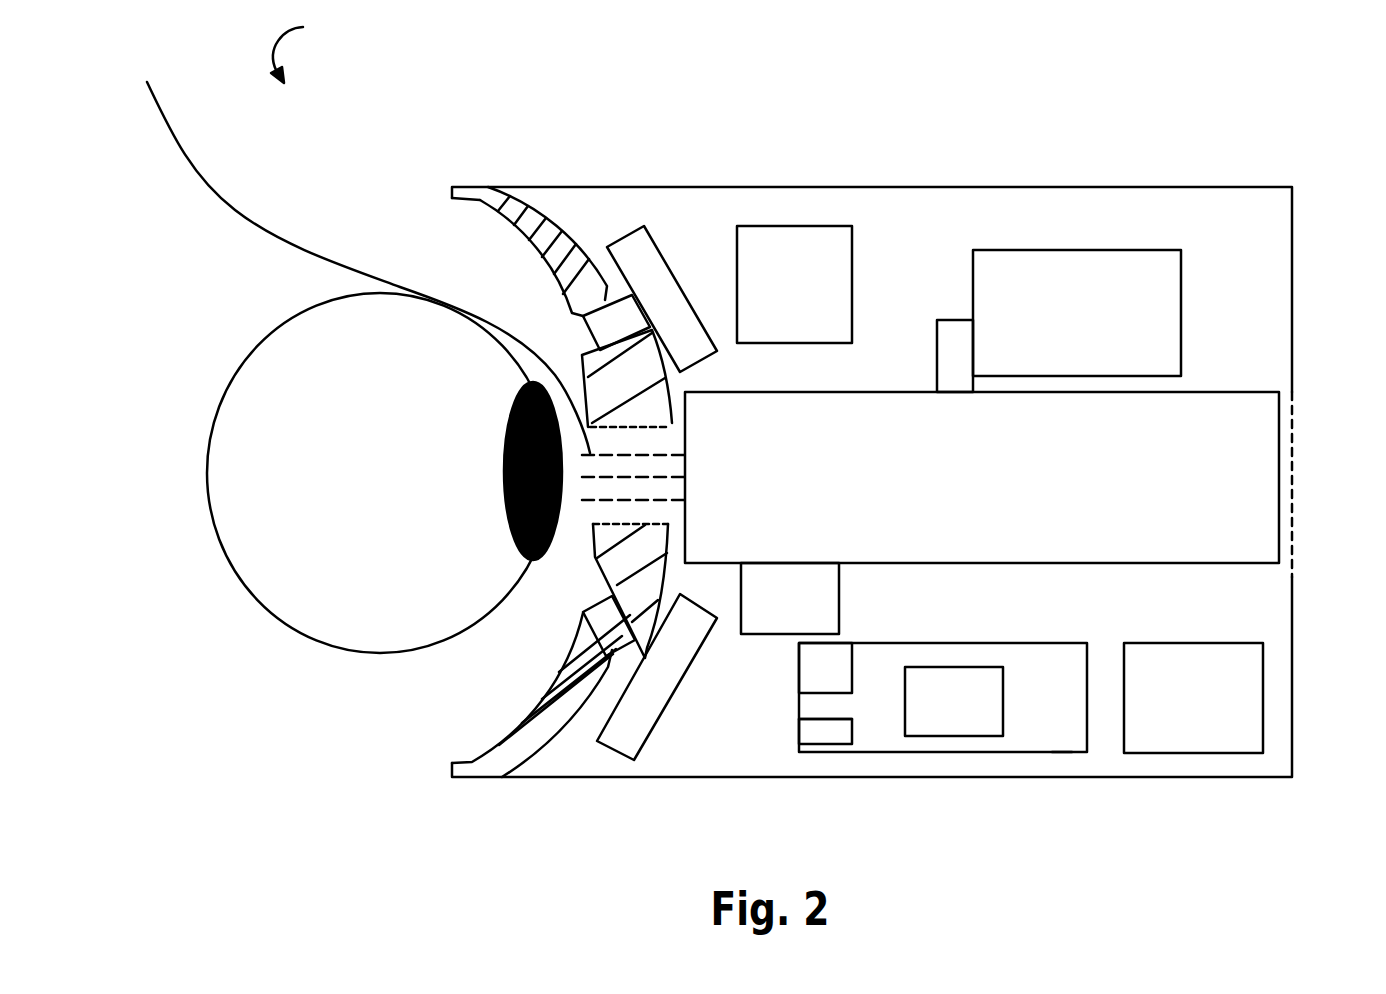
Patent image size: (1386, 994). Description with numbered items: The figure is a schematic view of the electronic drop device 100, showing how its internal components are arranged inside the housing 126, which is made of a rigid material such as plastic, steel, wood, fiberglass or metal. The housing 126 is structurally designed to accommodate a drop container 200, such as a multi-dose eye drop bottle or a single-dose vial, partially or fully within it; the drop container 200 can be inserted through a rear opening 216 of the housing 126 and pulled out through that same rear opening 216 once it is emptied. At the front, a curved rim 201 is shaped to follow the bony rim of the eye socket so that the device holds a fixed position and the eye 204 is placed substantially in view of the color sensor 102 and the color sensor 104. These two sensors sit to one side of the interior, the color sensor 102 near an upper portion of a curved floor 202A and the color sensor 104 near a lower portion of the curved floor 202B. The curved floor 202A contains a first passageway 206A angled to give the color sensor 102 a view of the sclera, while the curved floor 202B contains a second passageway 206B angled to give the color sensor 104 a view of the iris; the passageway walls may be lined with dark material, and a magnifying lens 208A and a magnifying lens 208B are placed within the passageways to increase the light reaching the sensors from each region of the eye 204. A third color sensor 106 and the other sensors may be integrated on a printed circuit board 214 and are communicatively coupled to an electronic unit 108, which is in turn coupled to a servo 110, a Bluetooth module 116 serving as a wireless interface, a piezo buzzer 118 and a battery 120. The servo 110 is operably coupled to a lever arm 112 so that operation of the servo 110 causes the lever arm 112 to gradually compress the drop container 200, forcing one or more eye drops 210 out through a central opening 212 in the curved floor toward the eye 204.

The electronic drop device 100 is at (312, 48).
The color sensor 102 is at (650, 224).
The color sensor 104 is at (606, 760).
The color sensor 106 is at (767, 612).
The electronic unit 108 is at (930, 737).
The servo 110 is at (1118, 250).
The lever arm 112 is at (950, 320).
The Bluetooth module 116 is at (1210, 750).
The piezo buzzer 118 is at (827, 742).
The battery 120 is at (766, 226).
The housing 126 is at (1065, 187).
The drop container 200 is at (1254, 392).
The curved rim 201 is at (455, 198).
The curved floor 202A is at (512, 205).
The curved floor 202B is at (473, 770).
The eye 204 is at (223, 543).
The first passageway 206A is at (605, 312).
The second passageway 206B is at (578, 757).
The magnifying lens 208A is at (573, 327).
The magnifying lens 208B is at (585, 608).
The eye drops 210 is at (359, 252).
The central opening 212 is at (590, 525).
The printed circuit board 214 is at (798, 727).
The rear opening 216 is at (1293, 476).